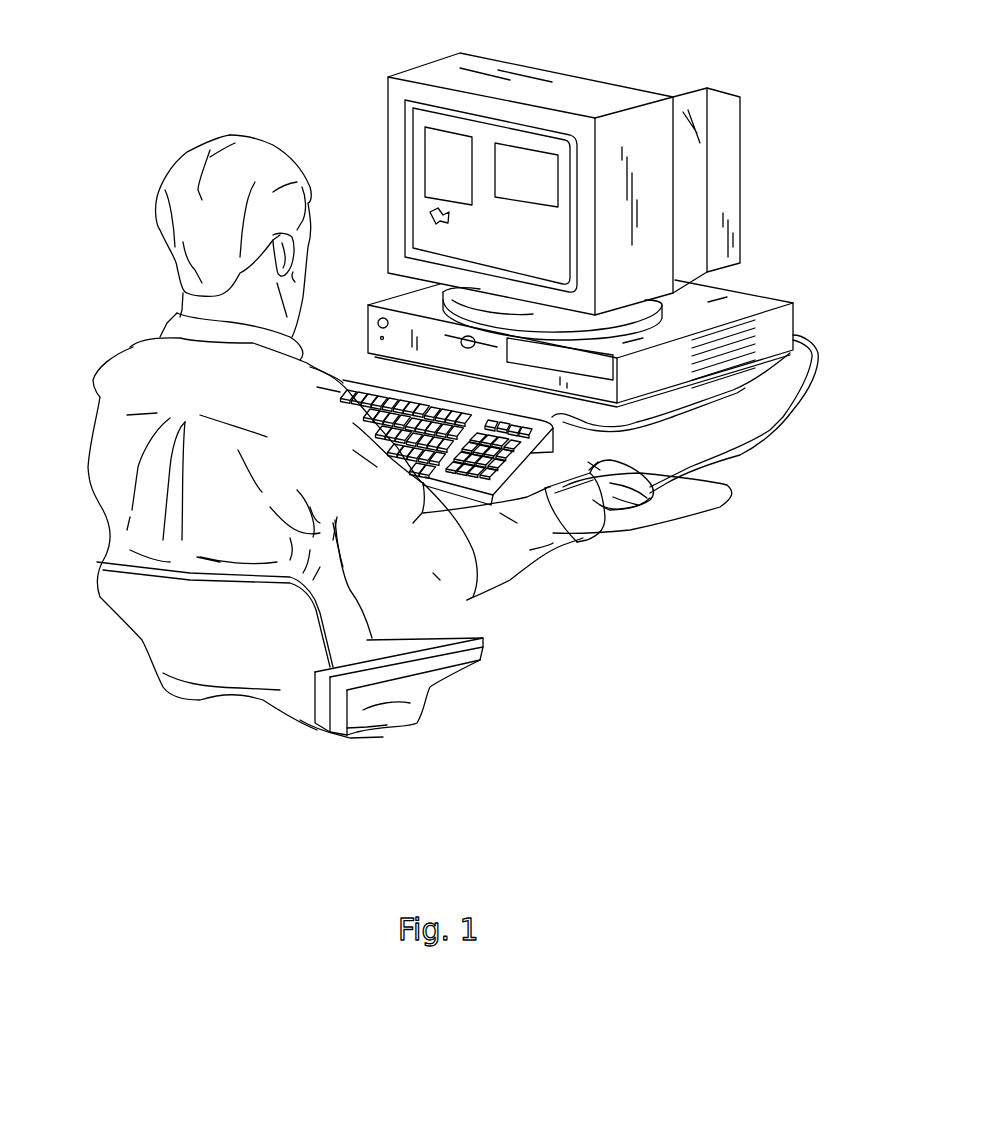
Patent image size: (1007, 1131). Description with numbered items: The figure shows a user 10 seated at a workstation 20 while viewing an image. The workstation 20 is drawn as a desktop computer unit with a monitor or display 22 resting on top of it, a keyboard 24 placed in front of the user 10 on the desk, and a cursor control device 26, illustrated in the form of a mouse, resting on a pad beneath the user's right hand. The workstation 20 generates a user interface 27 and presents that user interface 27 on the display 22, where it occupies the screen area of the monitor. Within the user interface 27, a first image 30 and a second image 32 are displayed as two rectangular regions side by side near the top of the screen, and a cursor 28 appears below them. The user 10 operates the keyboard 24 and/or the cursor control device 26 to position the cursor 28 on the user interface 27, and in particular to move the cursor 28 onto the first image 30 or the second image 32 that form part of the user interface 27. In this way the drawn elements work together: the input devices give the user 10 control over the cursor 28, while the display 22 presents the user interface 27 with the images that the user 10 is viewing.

The user 10 is at (133, 347).
The workstation 20 is at (773, 330).
The monitor or display 22 is at (597, 97).
The keyboard 24 is at (540, 432).
The cursor control device 26 is at (722, 487).
The user interface 27 is at (558, 248).
The cursor 28 is at (428, 215).
The first image 30 is at (427, 140).
The second image 32 is at (525, 147).